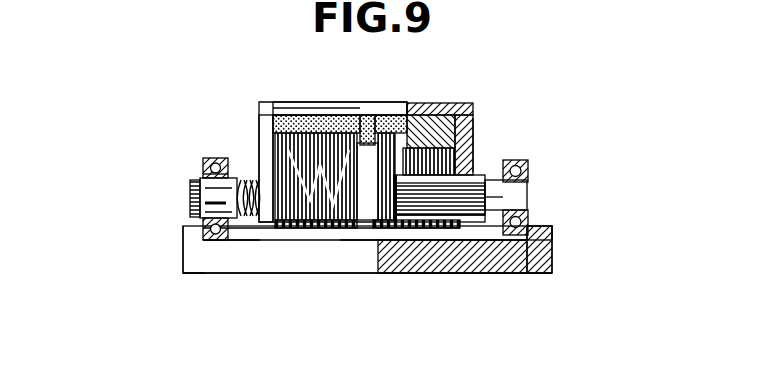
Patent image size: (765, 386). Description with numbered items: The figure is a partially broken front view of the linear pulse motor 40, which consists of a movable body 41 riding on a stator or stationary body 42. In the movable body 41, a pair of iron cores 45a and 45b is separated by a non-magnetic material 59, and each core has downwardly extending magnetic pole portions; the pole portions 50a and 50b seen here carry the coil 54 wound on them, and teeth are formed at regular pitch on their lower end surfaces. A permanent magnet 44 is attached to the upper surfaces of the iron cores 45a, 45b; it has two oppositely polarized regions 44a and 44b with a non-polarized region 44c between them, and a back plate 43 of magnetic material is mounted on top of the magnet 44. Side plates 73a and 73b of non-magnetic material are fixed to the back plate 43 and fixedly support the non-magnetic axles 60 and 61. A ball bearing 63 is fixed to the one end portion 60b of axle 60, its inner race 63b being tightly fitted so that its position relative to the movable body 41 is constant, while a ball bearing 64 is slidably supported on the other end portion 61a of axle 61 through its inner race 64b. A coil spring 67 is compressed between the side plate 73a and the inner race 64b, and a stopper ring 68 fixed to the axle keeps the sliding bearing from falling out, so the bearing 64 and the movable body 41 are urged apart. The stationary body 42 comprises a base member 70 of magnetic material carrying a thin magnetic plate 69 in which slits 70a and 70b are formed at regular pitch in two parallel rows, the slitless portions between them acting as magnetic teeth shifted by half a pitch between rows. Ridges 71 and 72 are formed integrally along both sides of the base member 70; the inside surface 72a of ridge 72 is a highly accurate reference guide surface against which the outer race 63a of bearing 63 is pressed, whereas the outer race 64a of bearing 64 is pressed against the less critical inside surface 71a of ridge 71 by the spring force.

The linear pulse motor 40 is at (250, 95).
The movable body 41 is at (394, 104).
The stationary body 42 is at (228, 258).
The back plate 43 is at (327, 108).
The permanent magnet 44 is at (451, 130).
The polarized region 44a is at (289, 117).
The polarized region 44b is at (447, 117).
The non-polarized region 44c is at (367, 124).
The iron core 45a is at (240, 148).
The iron core 45b is at (491, 143).
The magnetic pole portion 50a is at (293, 230).
The magnetic pole portion 50b is at (413, 218).
The coil 54 is at (472, 213).
The non-magnetic material 59 is at (365, 208).
The axle 60 is at (488, 190).
The one end portion 60b is at (512, 192).
The axle 61 is at (200, 185).
The other end portion 61a is at (200, 208).
The ball bearing 63 is at (528, 166).
The outer race 63a is at (532, 165).
The inner race 63b is at (528, 173).
The ball bearing 64 is at (213, 162).
The outer race 64a is at (222, 158).
The inner race 64b is at (202, 172).
The coil spring 67 is at (238, 213).
The stopper ring 68 is at (205, 222).
The magnetic plate 69 is at (468, 218).
The base member 70 is at (315, 252).
The slits 70a is at (438, 241).
The slits 70b is at (350, 242).
The ridge 71 is at (192, 238).
The inside surface 71a is at (213, 240).
The ridge 72 is at (543, 228).
The inside surface 72a is at (520, 245).
The side plate 73a is at (258, 130).
The side plate 73b is at (486, 134).